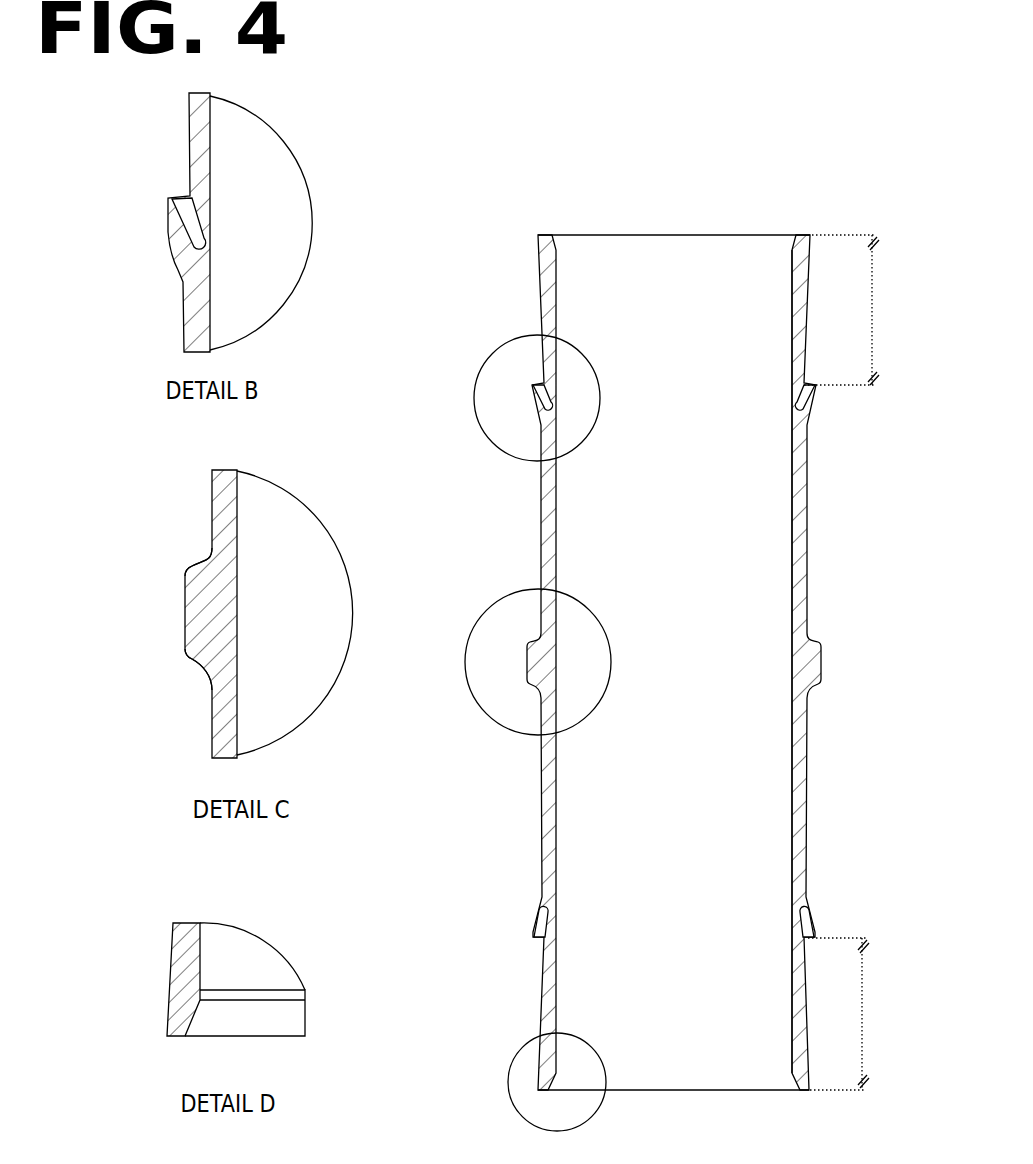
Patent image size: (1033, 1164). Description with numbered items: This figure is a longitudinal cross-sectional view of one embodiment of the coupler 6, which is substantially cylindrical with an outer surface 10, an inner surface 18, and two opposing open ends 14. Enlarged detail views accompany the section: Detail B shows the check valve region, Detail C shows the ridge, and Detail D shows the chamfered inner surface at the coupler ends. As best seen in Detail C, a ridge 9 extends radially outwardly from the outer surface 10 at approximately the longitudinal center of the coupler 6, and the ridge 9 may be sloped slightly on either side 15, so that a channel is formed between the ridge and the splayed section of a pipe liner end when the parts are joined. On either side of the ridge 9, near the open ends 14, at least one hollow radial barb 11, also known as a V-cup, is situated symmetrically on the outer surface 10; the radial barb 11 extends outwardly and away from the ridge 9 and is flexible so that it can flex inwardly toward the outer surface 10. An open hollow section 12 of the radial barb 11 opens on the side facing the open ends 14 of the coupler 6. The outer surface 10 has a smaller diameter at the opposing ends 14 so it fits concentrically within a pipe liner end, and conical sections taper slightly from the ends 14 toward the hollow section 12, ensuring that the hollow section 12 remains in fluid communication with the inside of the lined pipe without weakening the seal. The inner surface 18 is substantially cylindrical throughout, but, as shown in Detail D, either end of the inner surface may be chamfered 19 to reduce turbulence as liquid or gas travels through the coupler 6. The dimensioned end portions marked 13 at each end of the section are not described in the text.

The coupler 6 is at (612, 175).
The ridge 9 is at (181, 612).
The outer surface 10 is at (814, 744).
The radial barb 11 is at (164, 218).
The hollow section 12 is at (177, 207).
The end section 13 is at (874, 296).
The open ends 14 is at (541, 234).
The sloped side 15 is at (189, 561).
The inner surface 18 is at (794, 803).
The chamfer 19 is at (198, 1027).